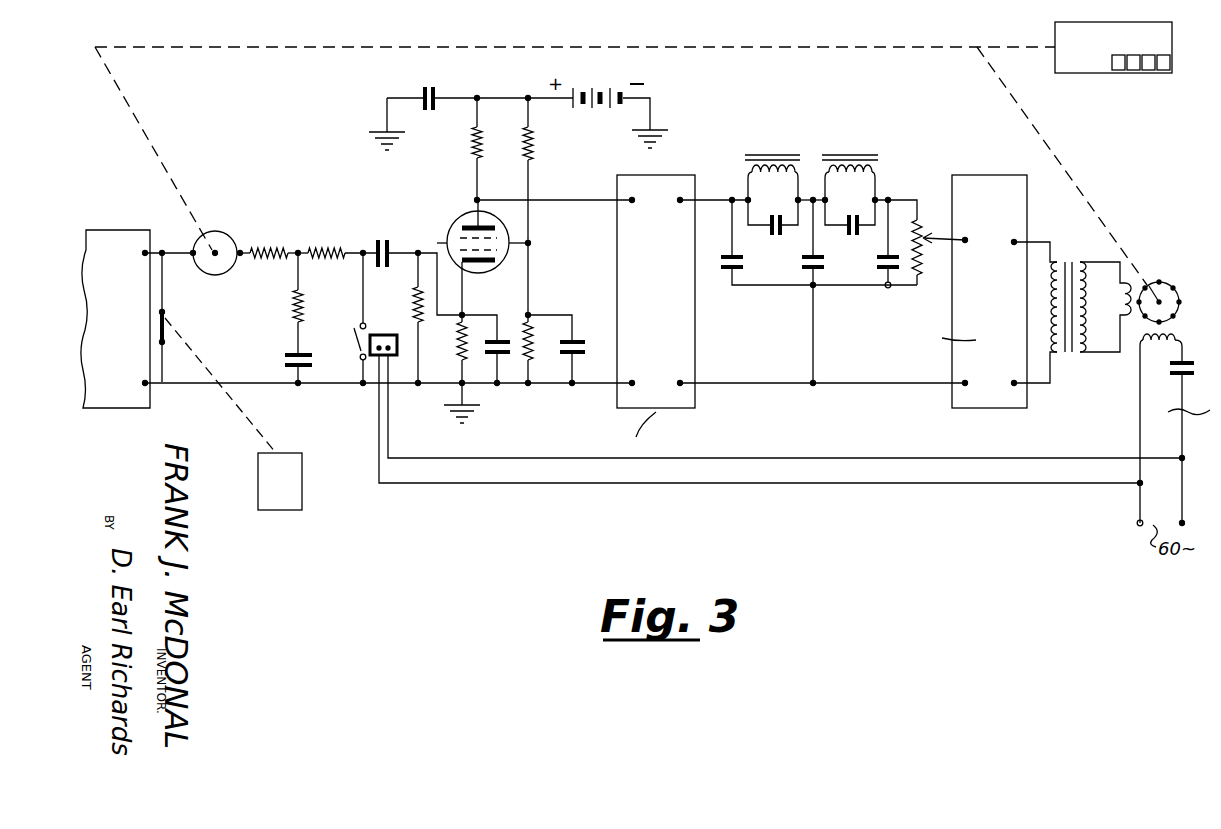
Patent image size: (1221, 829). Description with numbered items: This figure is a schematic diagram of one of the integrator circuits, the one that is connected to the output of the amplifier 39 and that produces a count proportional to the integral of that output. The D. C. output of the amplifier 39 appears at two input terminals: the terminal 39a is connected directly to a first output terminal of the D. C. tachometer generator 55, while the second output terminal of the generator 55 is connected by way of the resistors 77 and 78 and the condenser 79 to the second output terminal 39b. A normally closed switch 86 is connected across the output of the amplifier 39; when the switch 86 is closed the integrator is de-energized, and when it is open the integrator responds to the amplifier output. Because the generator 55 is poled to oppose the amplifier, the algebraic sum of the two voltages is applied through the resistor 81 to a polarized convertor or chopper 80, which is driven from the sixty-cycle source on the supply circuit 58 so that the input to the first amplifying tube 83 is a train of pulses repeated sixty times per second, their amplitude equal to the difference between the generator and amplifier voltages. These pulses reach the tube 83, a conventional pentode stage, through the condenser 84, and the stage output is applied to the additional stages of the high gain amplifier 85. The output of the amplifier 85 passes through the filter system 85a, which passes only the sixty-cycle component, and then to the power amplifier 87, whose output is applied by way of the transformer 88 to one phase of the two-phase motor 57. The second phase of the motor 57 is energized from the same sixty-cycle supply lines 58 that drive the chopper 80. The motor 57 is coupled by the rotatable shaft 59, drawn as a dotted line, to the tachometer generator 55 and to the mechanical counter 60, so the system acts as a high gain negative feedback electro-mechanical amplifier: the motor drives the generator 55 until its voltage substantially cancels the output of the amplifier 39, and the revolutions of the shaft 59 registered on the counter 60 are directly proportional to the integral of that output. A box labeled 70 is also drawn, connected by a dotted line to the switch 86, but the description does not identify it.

The amplifier 39 is at (118, 329).
The terminal 39a is at (143, 254).
The second output terminal 39b is at (143, 384).
The tachometer generator 55 is at (220, 268).
The two-phase motor 57 is at (1165, 283).
The alternating current supply circuit 58 is at (662, 477).
The shaft 59 is at (706, 34).
The mechanical counter 60 is at (1094, 67).
The control unit 70 is at (280, 481).
The resistor 77 is at (284, 242).
The resistor 78 is at (303, 300).
The condenser 79 is at (290, 355).
The chopper 80 is at (358, 356).
The resistor 81 is at (350, 243).
The first amplifying tube 83 is at (460, 225).
The condenser 84 is at (383, 239).
The amplifier 85 is at (665, 292).
The filter system 85a is at (832, 141).
The switch 86 is at (166, 320).
The power amplifier 87 is at (995, 299).
The transformer 88 is at (1066, 357).